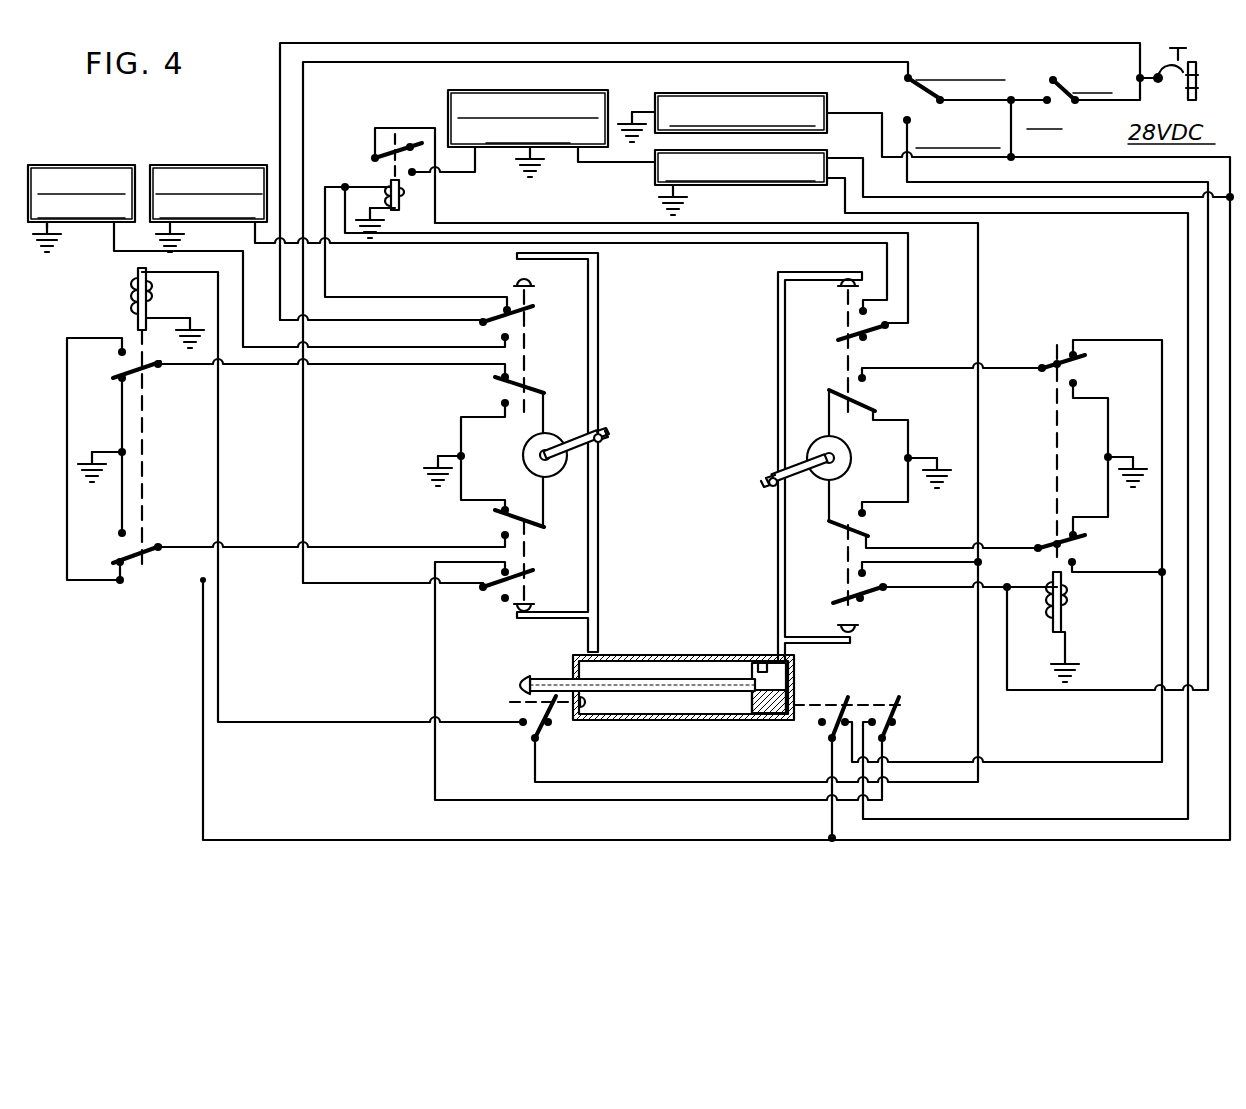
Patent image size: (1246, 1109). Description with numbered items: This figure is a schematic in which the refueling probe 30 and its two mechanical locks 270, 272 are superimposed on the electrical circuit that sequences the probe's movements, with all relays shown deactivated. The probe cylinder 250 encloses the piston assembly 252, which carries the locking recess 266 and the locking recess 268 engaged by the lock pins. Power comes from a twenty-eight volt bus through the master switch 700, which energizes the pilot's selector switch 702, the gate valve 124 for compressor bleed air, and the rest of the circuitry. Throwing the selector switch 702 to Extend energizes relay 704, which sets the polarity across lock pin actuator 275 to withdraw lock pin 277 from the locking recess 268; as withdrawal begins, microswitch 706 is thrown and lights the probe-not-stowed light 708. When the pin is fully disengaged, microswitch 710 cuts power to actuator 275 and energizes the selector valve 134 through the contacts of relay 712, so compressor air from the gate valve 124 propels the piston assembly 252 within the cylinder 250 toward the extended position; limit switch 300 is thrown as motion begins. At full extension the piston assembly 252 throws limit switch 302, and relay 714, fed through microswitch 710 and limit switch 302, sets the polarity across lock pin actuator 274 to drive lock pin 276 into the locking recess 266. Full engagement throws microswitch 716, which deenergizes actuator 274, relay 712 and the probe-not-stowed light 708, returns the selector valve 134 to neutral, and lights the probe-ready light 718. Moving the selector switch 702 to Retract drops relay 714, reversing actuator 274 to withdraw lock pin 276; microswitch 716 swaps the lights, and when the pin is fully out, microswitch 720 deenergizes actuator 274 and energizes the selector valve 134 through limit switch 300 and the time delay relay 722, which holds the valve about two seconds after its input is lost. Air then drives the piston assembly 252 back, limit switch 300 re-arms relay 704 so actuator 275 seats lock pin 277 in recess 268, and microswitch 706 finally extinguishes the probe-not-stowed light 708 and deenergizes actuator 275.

The probe-ready light 718 is at (97, 164).
The probe-not-stowed light 708 is at (209, 164).
The relay 714 is at (118, 282).
The relay 712 is at (373, 150).
The selector valve 134 is at (450, 93).
The gate valve 124 is at (711, 94).
The time delay relay 722 is at (716, 190).
The selector switch 702 is at (898, 98).
The master switch 700 is at (1074, 108).
The microswitch 716 is at (535, 353).
The microswitch 720 is at (534, 556).
The lock pin actuator 274 is at (540, 460).
The mechanical lock 272 is at (616, 421).
The lock pin 276 is at (604, 493).
The microswitch 706 is at (827, 320).
The mechanical lock 270 is at (778, 418).
The lock pin actuator 275 is at (843, 450).
The lock pin 277 is at (780, 507).
The microswitch 710 is at (833, 548).
The probe 30 is at (687, 687).
The cylinder 250 is at (645, 660).
The locking recess 266 is at (765, 660).
The locking recess 268 is at (790, 674).
The piston assembly 252 is at (648, 688).
The limit switch 302 is at (520, 736).
The limit switch 300 is at (872, 700).
The relay 704 is at (1070, 612).